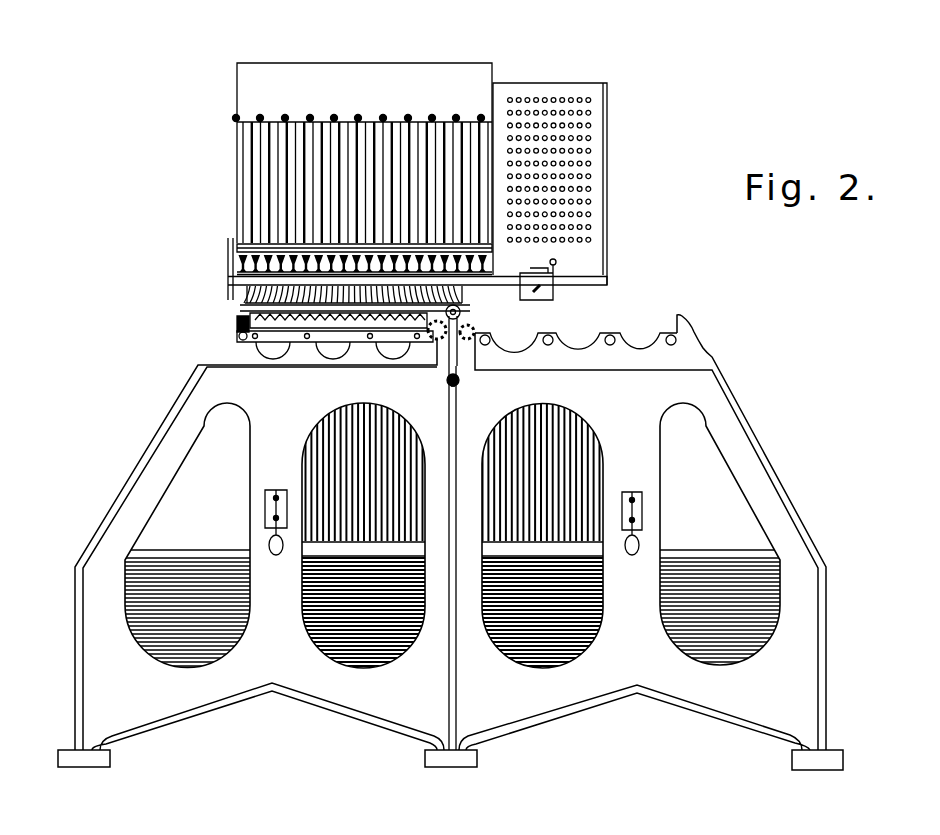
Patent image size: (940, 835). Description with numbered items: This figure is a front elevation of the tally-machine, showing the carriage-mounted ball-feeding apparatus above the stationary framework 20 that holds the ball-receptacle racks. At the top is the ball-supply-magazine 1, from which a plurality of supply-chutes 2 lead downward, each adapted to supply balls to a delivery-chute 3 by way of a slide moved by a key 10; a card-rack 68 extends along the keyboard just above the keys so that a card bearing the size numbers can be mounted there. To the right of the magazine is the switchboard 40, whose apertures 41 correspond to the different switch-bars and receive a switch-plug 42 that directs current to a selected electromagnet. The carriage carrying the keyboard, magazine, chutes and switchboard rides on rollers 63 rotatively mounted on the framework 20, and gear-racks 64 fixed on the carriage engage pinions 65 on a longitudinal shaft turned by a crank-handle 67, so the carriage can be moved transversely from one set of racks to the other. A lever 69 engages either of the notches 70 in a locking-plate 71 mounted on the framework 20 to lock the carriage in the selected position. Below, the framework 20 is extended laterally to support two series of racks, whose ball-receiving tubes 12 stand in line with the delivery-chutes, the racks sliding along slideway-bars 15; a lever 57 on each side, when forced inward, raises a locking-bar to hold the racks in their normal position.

The ball-supply-magazine 1 is at (343, 76).
The supply-chutes 2 is at (280, 172).
The card-rack 68 is at (243, 249).
The key 10 is at (237, 263).
The delivery-chute 3 is at (240, 310).
The lever 69 is at (243, 332).
The notches 70 is at (256, 345).
The gear-racks 64 is at (310, 333).
The locking-plate 71 is at (340, 338).
The crank-handle 67 is at (446, 381).
The pinions 65 is at (463, 332).
The rollers 63 is at (661, 340).
The switchboard 40 is at (597, 130).
The apertures 41 is at (592, 203).
The switch-plug 42 is at (556, 265).
The tubes 12 is at (310, 427).
The framework 20 is at (250, 462).
The slideway-bars 15 is at (186, 552).
The lever 57 is at (276, 556).